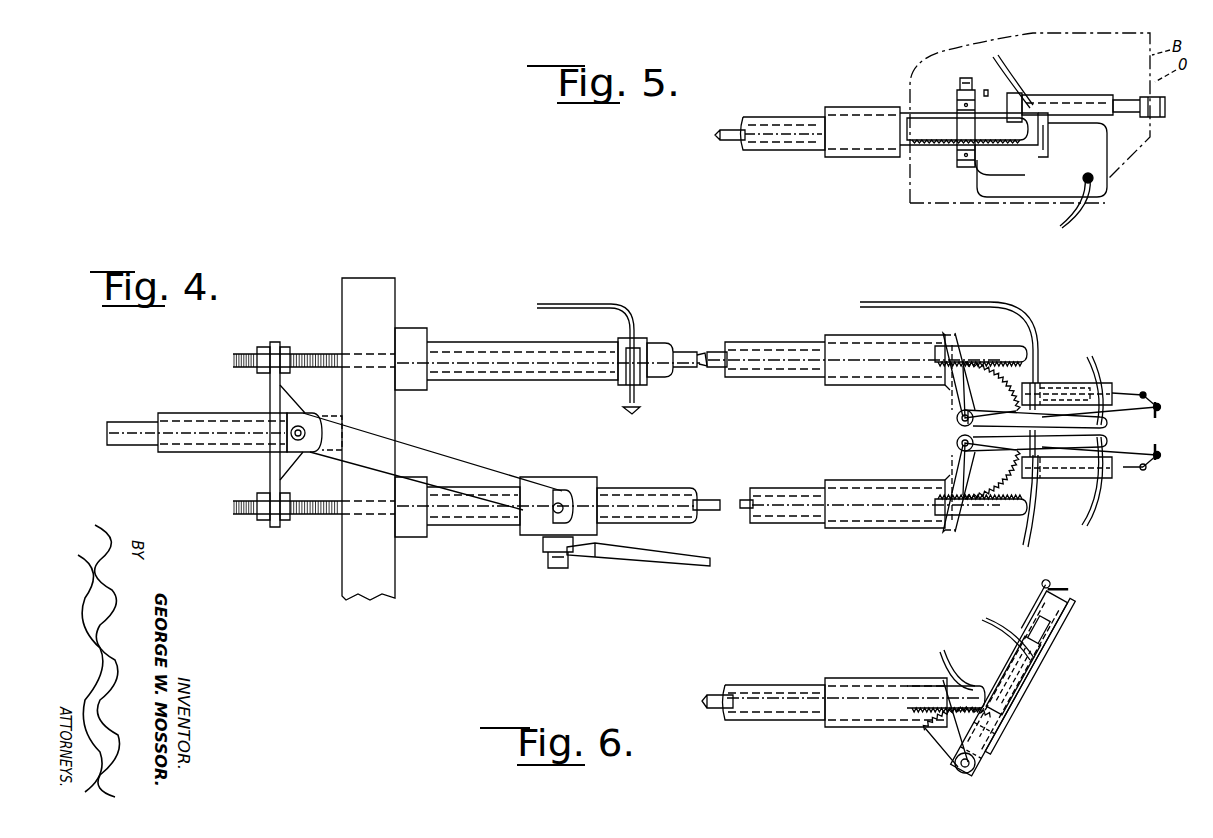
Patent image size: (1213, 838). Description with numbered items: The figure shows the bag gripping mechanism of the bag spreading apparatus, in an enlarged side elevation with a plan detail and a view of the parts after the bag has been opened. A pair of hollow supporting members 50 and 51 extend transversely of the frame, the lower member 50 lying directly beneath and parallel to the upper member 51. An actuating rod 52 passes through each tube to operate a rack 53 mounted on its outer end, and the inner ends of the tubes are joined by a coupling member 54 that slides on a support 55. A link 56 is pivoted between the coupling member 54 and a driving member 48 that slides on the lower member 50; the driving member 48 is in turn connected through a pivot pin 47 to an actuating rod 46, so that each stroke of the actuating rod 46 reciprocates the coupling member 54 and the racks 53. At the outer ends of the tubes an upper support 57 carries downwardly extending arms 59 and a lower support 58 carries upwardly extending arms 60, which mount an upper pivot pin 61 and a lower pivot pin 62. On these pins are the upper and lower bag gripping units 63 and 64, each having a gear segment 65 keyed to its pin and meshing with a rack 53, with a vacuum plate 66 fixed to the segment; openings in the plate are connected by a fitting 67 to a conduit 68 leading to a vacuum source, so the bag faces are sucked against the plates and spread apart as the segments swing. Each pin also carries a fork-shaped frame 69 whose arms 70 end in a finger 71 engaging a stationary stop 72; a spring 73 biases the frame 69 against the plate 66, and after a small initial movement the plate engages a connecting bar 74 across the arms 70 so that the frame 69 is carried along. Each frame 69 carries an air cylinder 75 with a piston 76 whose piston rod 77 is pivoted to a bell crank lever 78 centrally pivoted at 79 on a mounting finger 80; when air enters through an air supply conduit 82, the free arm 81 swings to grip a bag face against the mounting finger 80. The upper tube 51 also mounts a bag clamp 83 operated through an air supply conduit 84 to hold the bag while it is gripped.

In FIG. 4, the actuating rod 46 is at (675, 562).
In FIG. 4, the pivot pin 47 is at (562, 566).
In FIG. 4, the driving member 48 is at (530, 530).
In FIG. 4, the lower hollow supporting member 50 is at (460, 524).
In FIG. 5, the upper hollow supporting member 51 is at (785, 143).
In FIG. 4, the upper hollow supporting member 51 is at (465, 348).
In FIG. 6, the upper hollow supporting member 51 is at (770, 690).
In FIG. 5, the actuating rod 52 is at (732, 138).
In FIG. 4, the actuating rod 52 is at (682, 350).
In FIG. 6, the actuating rod 52 is at (720, 694).
In FIG. 5, the rack 53 is at (1000, 130).
In FIG. 4, the rack 53 is at (970, 350).
In FIG. 6, the rack 53 is at (960, 698).
In FIG. 4, the coupling member 54 is at (275, 385).
In FIG. 4, the support 55 is at (140, 436).
In FIG. 4, the link 56 is at (438, 464).
In FIG. 5, the upper support 57 is at (855, 150).
In FIG. 4, the upper support 57 is at (830, 338).
In FIG. 6, the upper support 57 is at (855, 682).
In FIG. 4, the lower support 58 is at (843, 480).
In FIG. 5, the downwardly extending arms 59 is at (922, 113).
In FIG. 4, the downwardly extending arms 59 is at (945, 378).
In FIG. 6, the downwardly extending arms 59 is at (930, 732).
In FIG. 4, the upwardly extending arms 60 is at (940, 455).
In FIG. 4, the upper pivot pin 61 is at (956, 414).
In FIG. 6, the upper pivot pin 61 is at (962, 773).
In FIG. 4, the lower pivot pin 62 is at (956, 441).
In FIG. 4, the upper bag gripping unit 63 is at (1040, 380).
In FIG. 4, the lower bag gripping unit 64 is at (1070, 480).
In FIG. 4, the gear segment 65 is at (1040, 360).
In FIG. 6, the gear segment 65 is at (985, 728).
In FIG. 5, the vacuum plate 66 is at (1100, 165).
In FIG. 6, the vacuum plate 66 is at (1025, 680).
In FIG. 5, the fitting 67 is at (1092, 182).
In FIG. 5, the conduit 68 is at (1080, 220).
In FIG. 4, the conduit 68 is at (1095, 372).
In FIG. 6, the conduit 68 is at (986, 620).
In FIG. 5, the fork-shaped frame 69 is at (1048, 135).
In FIG. 5, the arm 70 is at (1000, 93).
In FIG. 4, the finger 71 is at (975, 408).
In FIG. 4, the stationary stop 72 is at (968, 392).
In FIG. 6, the stationary stop 72 is at (956, 718).
In FIG. 5, the spring 73 is at (960, 84).
In FIG. 5, the connecting bar 74 is at (1045, 140).
In FIG. 5, the air cylinder 75 is at (1045, 95).
In FIG. 6, the air cylinder 75 is at (985, 672).
In FIG. 4, the piston 76 is at (1062, 388).
In FIG. 4, the piston rod 77 is at (1130, 392).
In FIG. 6, the piston rod 77 is at (1042, 612).
In FIG. 4, the bell crank lever 78 is at (1150, 400).
In FIG. 5, the central pivotal connection 79 is at (1162, 104).
In FIG. 4, the central pivotal connection 79 is at (1162, 406).
In FIG. 4, the mounting finger 80 is at (1132, 412).
In FIG. 6, the mounting finger 80 is at (1058, 634).
In FIG. 4, the free arm 81 is at (1158, 448).
In FIG. 6, the free arm 81 is at (1072, 605).
In FIG. 5, the air supply conduit 82 is at (1013, 78).
In FIG. 4, the air supply conduit 82 is at (970, 306).
In FIG. 6, the air supply conduit 82 is at (942, 652).
In FIG. 4, the bag clamp 83 is at (632, 414).
In FIG. 4, the air supply conduit 84 is at (586, 308).